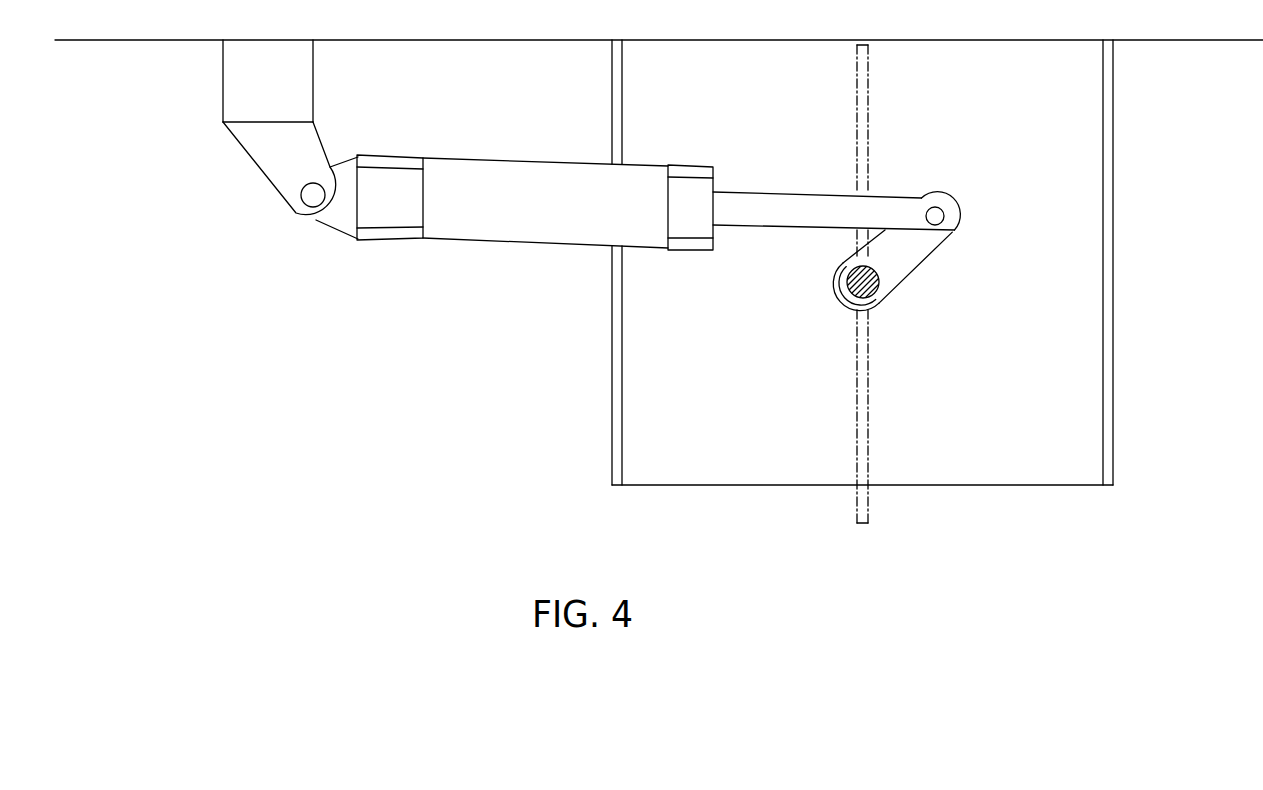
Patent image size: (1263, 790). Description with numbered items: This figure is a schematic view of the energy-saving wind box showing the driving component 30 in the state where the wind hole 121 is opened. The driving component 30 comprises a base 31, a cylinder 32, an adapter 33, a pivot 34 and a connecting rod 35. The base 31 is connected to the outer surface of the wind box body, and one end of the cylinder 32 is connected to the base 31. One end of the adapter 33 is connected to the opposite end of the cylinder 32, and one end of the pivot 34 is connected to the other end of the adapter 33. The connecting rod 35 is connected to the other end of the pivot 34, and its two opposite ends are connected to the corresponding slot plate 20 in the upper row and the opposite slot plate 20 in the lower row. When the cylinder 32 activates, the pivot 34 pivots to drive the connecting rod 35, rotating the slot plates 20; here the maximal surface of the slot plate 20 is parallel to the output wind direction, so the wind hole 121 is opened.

The slot plate 20 is at (868, 127).
The driving component 30 is at (561, 207).
The base 31 is at (252, 80).
The cylinder 32 is at (483, 228).
The adapter 33 is at (795, 205).
The pivot 34 is at (905, 256).
The connecting rod 35 is at (872, 293).
The wind hole 121 is at (1105, 438).